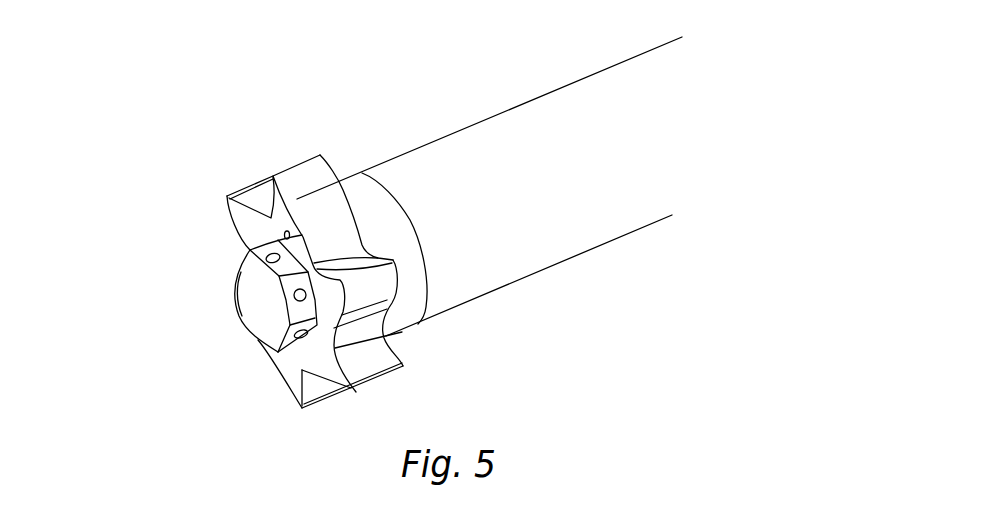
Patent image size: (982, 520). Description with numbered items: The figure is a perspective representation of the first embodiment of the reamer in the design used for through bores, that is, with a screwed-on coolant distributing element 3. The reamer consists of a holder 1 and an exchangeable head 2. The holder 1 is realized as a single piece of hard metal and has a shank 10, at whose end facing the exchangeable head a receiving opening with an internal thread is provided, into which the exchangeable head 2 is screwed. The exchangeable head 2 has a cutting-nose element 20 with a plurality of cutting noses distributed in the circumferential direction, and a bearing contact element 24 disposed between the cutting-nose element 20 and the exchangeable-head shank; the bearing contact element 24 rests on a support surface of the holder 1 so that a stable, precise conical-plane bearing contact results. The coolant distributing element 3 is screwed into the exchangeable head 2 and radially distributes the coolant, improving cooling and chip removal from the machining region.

The holder 1 is at (474, 120).
The exchangeable head 2 is at (298, 155).
The coolant distributing element 3 is at (251, 337).
The shank 10 is at (590, 240).
The cutting-nose element 20 is at (225, 210).
The bearing contact element 24 is at (410, 318).